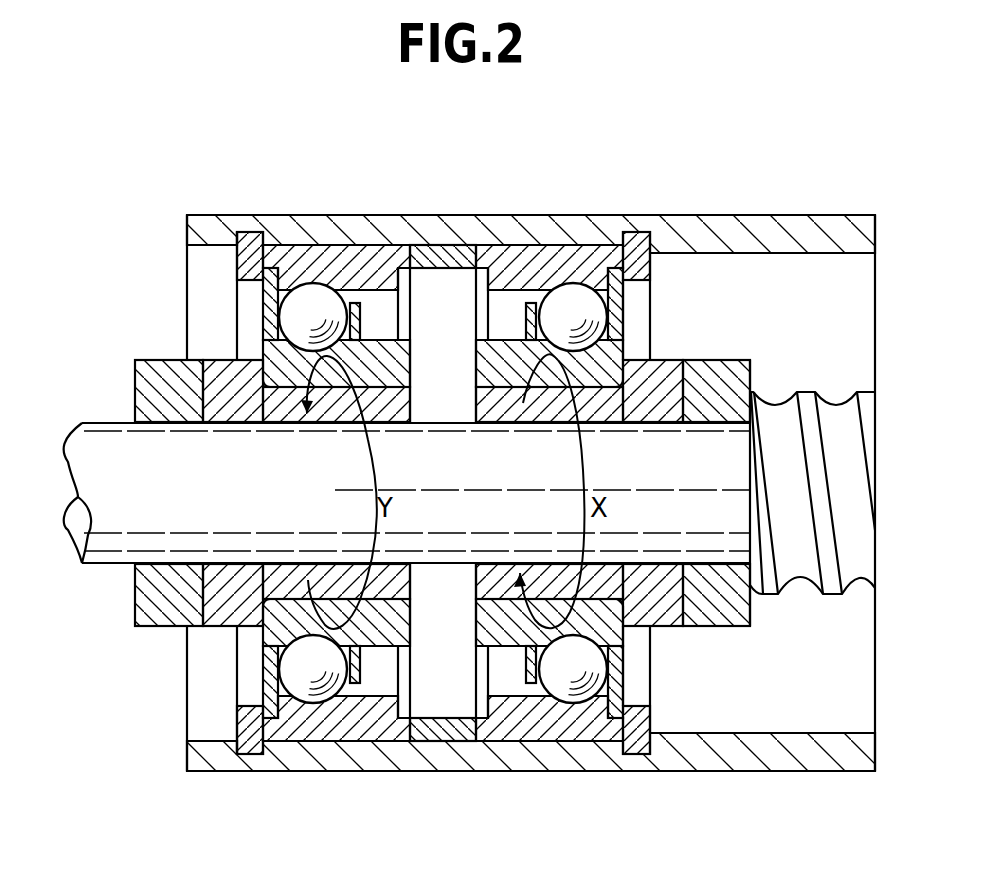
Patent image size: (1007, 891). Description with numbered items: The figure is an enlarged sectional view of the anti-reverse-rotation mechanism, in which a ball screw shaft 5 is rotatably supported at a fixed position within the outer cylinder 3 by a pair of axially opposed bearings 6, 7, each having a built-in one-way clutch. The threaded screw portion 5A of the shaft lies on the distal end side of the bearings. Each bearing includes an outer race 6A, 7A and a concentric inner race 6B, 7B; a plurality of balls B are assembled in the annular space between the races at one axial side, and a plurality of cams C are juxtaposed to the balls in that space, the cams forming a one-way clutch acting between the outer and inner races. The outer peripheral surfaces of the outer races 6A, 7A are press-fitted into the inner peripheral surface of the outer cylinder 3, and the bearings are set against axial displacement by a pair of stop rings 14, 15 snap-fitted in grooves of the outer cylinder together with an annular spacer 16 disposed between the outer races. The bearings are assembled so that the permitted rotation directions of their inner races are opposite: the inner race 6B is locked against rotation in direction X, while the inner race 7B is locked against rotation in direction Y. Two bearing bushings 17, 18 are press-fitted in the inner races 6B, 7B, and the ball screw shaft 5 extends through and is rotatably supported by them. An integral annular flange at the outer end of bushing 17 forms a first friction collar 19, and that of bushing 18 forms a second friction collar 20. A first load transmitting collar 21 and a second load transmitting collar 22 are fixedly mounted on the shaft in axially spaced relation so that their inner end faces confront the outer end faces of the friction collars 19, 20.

The outer cylinder 3 is at (772, 223).
The ball screw shaft 5 is at (108, 412).
The threaded screw portion 5A is at (828, 582).
The bearing 6 is at (605, 436).
The outer race 6A is at (537, 263).
The inner race 6B is at (607, 378).
The bearing 7 is at (266, 436).
The outer race 7A is at (296, 252).
The inner race 7B is at (290, 382).
The balls B is at (316, 298).
The cams C is at (375, 300).
The stop ring 14 is at (634, 232).
The stop ring 15 is at (247, 232).
The annular spacer 16 is at (430, 262).
The bearing bushing 17 is at (500, 402).
The bearing bushing 18 is at (388, 410).
The first friction collar 19 is at (667, 370).
The second friction collar 20 is at (230, 367).
The first load transmitting collar 21 is at (732, 367).
The second load transmitting collar 22 is at (165, 363).